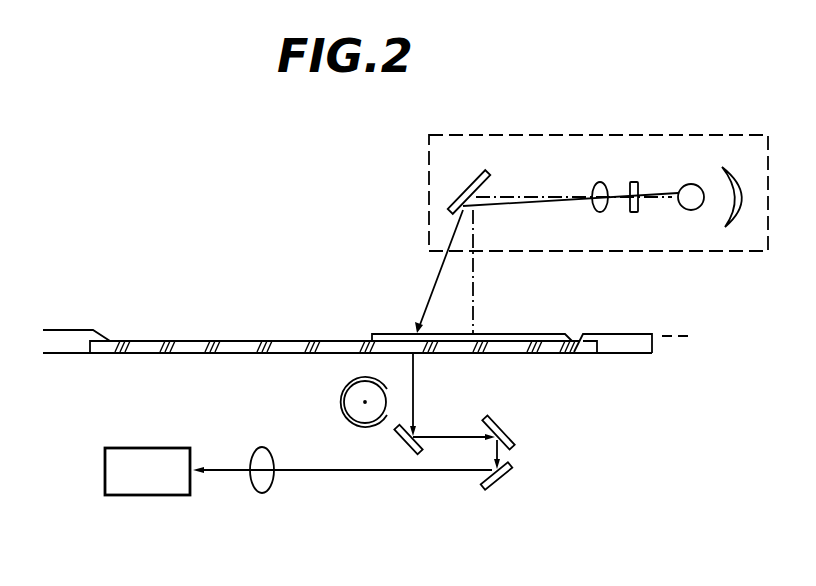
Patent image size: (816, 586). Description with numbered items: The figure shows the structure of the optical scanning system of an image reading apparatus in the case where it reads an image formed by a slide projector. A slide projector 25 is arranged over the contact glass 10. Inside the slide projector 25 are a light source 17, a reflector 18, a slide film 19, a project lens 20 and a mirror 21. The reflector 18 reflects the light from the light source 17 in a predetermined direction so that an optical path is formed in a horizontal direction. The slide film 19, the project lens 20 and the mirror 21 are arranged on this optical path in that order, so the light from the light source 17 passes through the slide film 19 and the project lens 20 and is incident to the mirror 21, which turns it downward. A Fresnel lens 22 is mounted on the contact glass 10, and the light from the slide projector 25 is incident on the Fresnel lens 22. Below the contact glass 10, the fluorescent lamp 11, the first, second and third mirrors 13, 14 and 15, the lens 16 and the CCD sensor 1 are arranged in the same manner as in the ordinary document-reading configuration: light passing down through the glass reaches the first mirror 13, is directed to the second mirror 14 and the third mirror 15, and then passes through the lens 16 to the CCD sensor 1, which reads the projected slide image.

The CCD sensor 1 is at (150, 448).
The contact glass 10 is at (560, 356).
The fluorescent lamp 11 is at (338, 402).
The first mirror 13 is at (408, 455).
The second mirror 14 is at (503, 430).
The third mirror 15 is at (495, 485).
The lens 16 is at (262, 493).
The light source 17 is at (694, 183).
The reflector 18 is at (728, 227).
The slide film 19 is at (635, 181).
The project lens 20 is at (595, 190).
The mirror 21 is at (457, 198).
The Fresnel lens 22 is at (383, 331).
The slide projector 25 is at (748, 136).